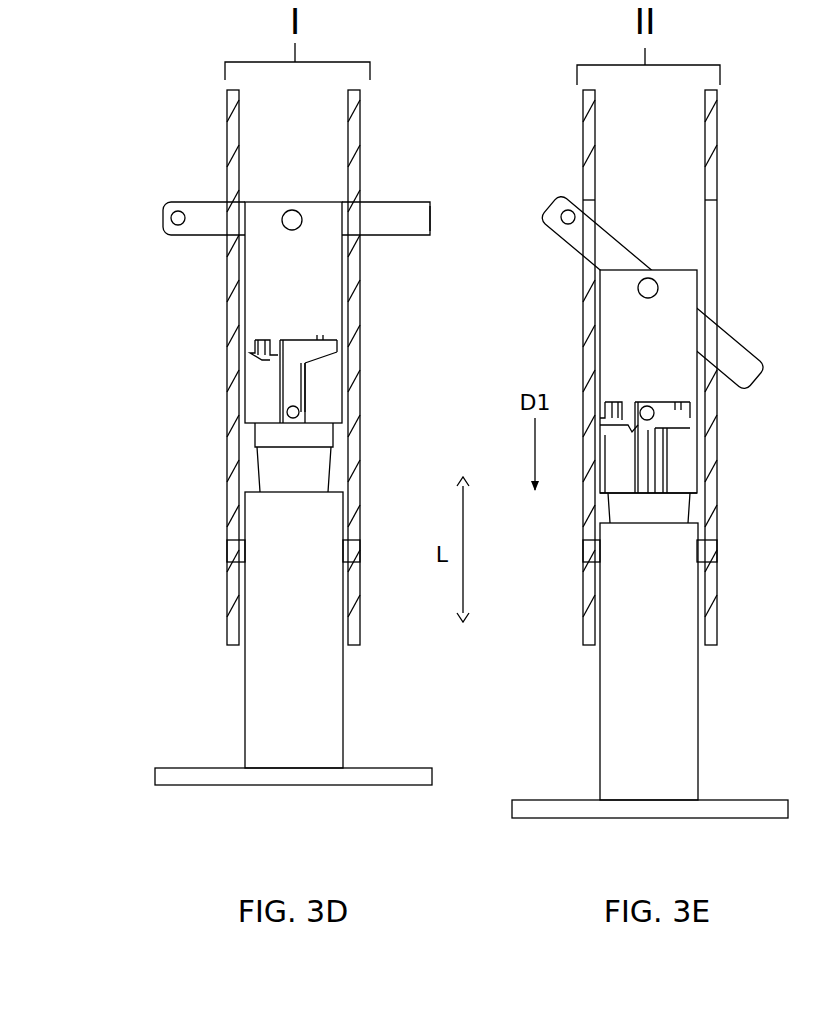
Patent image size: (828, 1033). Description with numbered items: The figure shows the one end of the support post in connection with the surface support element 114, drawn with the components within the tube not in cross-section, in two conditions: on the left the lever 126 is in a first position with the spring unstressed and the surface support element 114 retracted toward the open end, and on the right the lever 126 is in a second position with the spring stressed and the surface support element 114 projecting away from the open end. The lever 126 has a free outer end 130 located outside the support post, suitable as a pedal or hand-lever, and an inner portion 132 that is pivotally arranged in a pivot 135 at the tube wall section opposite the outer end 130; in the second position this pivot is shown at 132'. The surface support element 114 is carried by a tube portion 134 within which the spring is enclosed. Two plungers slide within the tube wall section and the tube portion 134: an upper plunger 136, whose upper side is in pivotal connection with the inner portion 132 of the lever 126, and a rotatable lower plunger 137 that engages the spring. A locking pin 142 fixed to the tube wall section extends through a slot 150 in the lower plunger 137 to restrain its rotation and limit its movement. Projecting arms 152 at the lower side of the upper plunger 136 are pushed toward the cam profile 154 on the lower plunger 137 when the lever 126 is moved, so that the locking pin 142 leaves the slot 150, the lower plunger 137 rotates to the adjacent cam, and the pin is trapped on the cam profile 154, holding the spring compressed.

In FIG. 3D, the surface support element 114 is at (155, 768).
In FIG. 3E, the surface support element 114 is at (650, 809).
In FIG. 3D, the lever 126 is at (380, 210).
In FIG. 3D, the free outer end 130 is at (420, 216).
In FIG. 3D, the inner portion 132 is at (191, 165).
In FIG. 3E, the pivot pin (rotated position) 132' is at (706, 267).
In FIG. 3D, the tube portion 134 is at (245, 703).
In FIG. 3E, the tube portion 134 is at (649, 661).
In FIG. 3D, the pivot 135 is at (163, 220).
In FIG. 3E, the pivot 135 is at (552, 212).
In FIG. 3D, the upper plunger 136 is at (272, 286).
In FIG. 3E, the upper plunger 136 is at (648, 381).
In FIG. 3D, the lower plunger 137 is at (275, 479).
In FIG. 3E, the lower plunger 137 is at (649, 508).
In FIG. 3D, the locking pin 142 is at (305, 410).
In FIG. 3E, the locking pin 142 is at (655, 413).
In FIG. 3D, the slot 150 is at (290, 377).
In FIG. 3E, the slot 150 is at (668, 431).
In FIG. 3D, the projecting arms 152 is at (272, 340).
In FIG. 3E, the projecting arms 152 is at (628, 420).
In FIG. 3E, the cam profile 154 is at (632, 442).